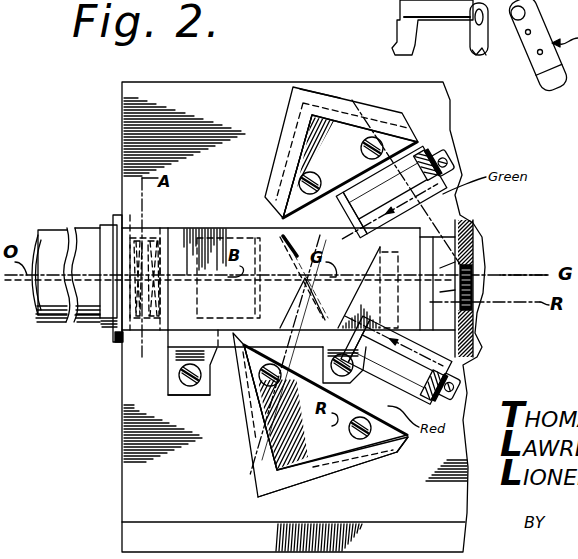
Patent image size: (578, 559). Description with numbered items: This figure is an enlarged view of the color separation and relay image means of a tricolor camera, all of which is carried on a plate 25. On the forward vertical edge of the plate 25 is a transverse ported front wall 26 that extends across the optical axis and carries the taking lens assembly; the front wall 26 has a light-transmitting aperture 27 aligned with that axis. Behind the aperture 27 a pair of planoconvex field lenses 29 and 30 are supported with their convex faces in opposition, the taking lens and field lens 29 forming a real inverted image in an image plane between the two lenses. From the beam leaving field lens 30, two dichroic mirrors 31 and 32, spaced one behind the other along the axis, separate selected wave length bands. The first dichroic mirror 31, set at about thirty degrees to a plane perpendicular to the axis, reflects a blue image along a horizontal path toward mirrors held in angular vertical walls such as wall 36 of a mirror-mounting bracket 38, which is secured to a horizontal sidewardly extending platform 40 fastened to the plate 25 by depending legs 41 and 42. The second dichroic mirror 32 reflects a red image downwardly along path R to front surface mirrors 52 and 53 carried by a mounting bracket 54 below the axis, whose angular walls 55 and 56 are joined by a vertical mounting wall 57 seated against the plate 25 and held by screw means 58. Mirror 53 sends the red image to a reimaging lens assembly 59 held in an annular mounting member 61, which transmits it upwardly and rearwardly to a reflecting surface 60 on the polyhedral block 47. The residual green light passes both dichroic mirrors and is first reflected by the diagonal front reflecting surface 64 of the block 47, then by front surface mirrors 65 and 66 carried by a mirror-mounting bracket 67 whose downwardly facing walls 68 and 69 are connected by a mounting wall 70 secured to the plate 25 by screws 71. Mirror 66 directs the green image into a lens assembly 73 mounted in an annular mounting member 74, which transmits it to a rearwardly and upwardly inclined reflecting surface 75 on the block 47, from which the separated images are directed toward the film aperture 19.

The aperture 19 is at (463, 300).
The plate 25 is at (224, 82).
The front wall 26 is at (116, 222).
The light-transmitting aperture 27 is at (118, 253).
The field lens 29 is at (130, 214).
The field lens 30 is at (156, 236).
The dichroic mirror 31 is at (228, 228).
The dichroic mirror 32 is at (284, 237).
The wall 36 is at (136, 328).
The mirror-mounting bracket 38 is at (244, 224).
The platform 40 is at (178, 342).
The depending leg 41 is at (348, 385).
The depending leg 42 is at (168, 396).
The polyhedral block 47 is at (446, 252).
The front surface mirror 52 is at (260, 416).
The front surface mirror 53 is at (388, 444).
The mounting bracket 54 is at (300, 492).
The wall 55 is at (250, 447).
The wall 56 is at (404, 441).
The mounting wall 57 is at (270, 462).
The screw means 58 is at (368, 438).
The reimaging lens assembly 59 is at (462, 362).
The reflecting surface 60 is at (477, 323).
The annular mounting member 61 is at (458, 390).
The reflecting surface 64 is at (376, 262).
The front surface mirror 65 is at (290, 142).
The front surface mirror 66 is at (357, 126).
The mirror-mounting bracket 67 is at (320, 80).
The wall 68 is at (292, 156).
The wall 69 is at (343, 103).
The mounting wall 70 is at (352, 178).
The screws 71 is at (386, 134).
The lens assembly 73 is at (441, 198).
The annular mounting member 74 is at (448, 152).
The reflecting surface 75 is at (436, 277).